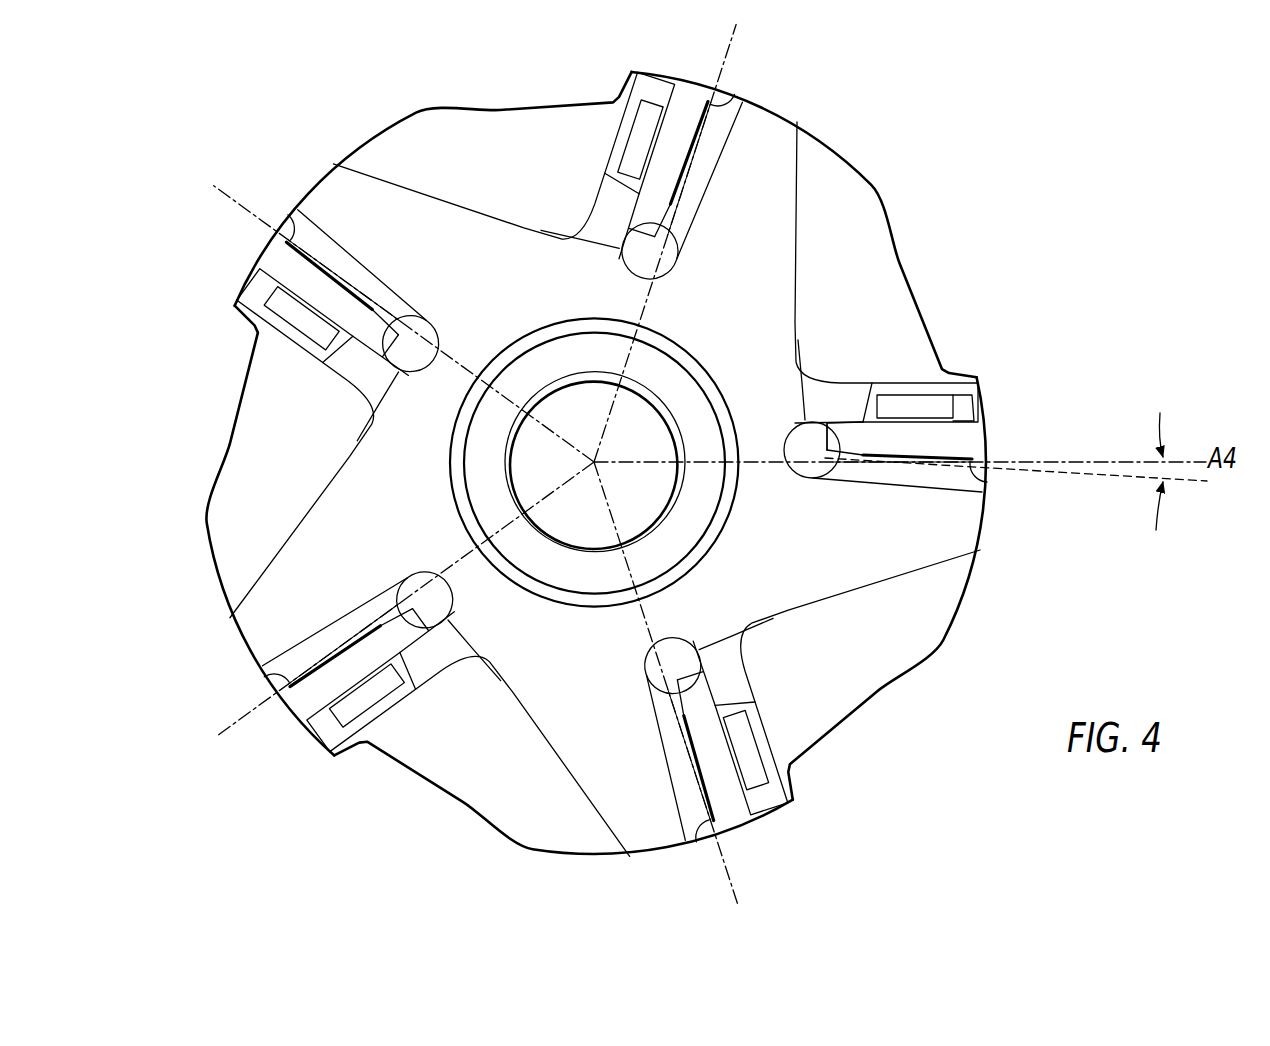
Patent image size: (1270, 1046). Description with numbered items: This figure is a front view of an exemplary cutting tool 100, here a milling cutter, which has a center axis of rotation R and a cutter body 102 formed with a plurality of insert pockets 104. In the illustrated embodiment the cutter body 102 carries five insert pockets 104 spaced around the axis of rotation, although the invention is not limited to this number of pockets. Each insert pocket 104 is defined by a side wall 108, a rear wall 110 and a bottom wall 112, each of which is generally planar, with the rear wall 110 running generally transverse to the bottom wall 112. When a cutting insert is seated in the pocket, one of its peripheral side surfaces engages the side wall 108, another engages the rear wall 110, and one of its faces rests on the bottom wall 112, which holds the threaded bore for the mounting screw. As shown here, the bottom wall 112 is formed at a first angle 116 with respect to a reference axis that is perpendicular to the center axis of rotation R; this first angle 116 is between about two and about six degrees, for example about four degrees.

The cutting tool 100 is at (985, 95).
The cutter body 102 is at (777, 113).
The insert pocket 104 is at (702, 77).
The side wall 108 is at (906, 398).
The rear wall 110 is at (822, 392).
The bottom wall 112 is at (979, 402).
The first angle 116 is at (1160, 413).